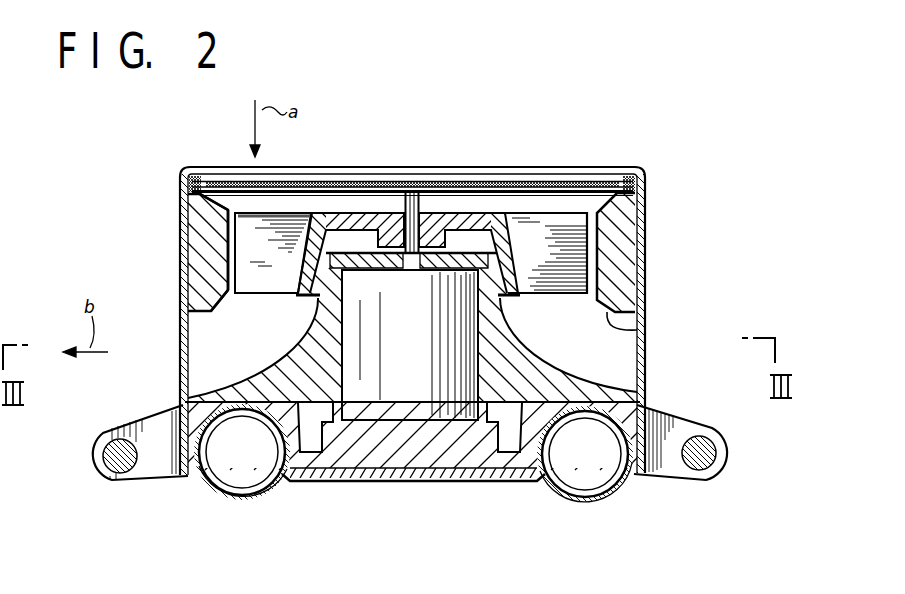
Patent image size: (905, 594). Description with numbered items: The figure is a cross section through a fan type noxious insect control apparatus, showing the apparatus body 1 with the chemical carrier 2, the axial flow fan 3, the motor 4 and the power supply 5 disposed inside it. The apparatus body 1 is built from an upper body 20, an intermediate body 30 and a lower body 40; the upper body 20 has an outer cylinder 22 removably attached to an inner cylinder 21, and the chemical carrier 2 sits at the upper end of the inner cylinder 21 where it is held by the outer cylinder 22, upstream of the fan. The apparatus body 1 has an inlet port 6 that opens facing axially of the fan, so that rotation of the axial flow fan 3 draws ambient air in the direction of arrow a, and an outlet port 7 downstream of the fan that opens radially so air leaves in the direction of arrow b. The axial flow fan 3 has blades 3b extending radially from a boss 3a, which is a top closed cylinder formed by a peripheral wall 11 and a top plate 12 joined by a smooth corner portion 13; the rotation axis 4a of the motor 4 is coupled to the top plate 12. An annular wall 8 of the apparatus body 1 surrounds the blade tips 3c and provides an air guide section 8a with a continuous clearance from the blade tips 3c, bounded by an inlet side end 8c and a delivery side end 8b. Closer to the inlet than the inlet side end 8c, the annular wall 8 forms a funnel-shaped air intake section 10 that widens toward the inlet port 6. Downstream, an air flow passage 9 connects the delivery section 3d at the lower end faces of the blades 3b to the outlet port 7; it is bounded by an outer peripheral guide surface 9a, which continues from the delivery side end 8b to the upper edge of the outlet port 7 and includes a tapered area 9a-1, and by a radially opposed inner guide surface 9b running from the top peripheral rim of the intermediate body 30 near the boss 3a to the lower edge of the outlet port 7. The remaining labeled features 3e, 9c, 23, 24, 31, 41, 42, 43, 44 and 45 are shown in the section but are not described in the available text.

The apparatus body 1 is at (656, 170).
The chemical carrier 2 is at (501, 186).
The axial flow fan 3 is at (278, 212).
The boss 3a is at (352, 270).
The blades 3b is at (267, 272).
The blade tips 3c is at (640, 273).
The delivery section 3d is at (549, 297).
The support upper surface 3e is at (544, 205).
The motor 4 is at (400, 378).
The rotation axis 4a is at (408, 200).
The power supply 5 is at (585, 486).
The inlet port 6 is at (373, 176).
The outlet port 7 is at (183, 343).
The annular wall 8 is at (198, 248).
The air guide section 8a is at (228, 254).
The delivery side end 8b is at (227, 290).
The inlet side end 8c is at (229, 227).
The air flow passage 9 is at (625, 346).
The outer peripheral guide surface 9a is at (637, 317).
The tapered area 9a-1 is at (640, 328).
The inner guide surface 9b is at (625, 388).
The base left portion 9c is at (184, 363).
The air intake section 10 is at (610, 182).
The peripheral wall 11 is at (508, 240).
The top plate 12 is at (451, 189).
The corner portion 13 is at (327, 193).
The upper body 20 is at (710, 196).
The inner cylinder 21 is at (622, 215).
The outer cylinder 22 is at (646, 233).
The adhesive layer 23 is at (242, 190).
The left corner seal 24 is at (197, 178).
The intermediate body 30 is at (320, 442).
The slot 31 is at (351, 442).
The lower body 40 is at (413, 507).
The bottom layer 41 is at (433, 450).
The bottom plate 42 is at (458, 480).
The bushing 43 is at (620, 491).
The bore 44 is at (566, 466).
The mounting lug 45 is at (108, 437).